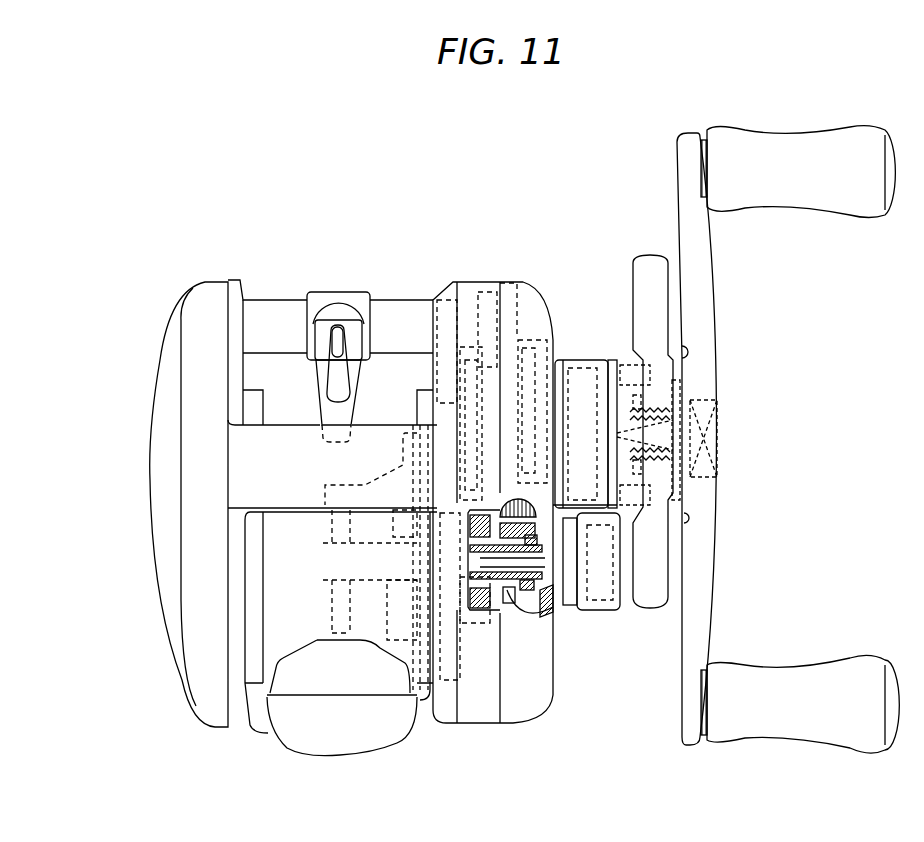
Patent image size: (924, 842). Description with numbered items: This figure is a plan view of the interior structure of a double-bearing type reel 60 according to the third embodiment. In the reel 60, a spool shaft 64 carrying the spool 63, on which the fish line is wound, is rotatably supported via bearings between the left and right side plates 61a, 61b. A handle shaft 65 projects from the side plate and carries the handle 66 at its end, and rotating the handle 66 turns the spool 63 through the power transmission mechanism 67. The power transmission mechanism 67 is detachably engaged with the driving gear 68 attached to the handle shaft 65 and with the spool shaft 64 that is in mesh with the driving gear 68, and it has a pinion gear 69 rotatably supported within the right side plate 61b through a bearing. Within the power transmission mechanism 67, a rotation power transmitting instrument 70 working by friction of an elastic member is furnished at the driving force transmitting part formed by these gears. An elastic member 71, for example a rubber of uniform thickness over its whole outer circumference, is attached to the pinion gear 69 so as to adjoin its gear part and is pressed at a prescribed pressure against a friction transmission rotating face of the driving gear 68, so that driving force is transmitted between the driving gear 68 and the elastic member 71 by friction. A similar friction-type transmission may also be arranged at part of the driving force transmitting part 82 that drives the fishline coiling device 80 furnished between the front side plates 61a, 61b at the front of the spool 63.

The double-bearing type reel 60 is at (483, 717).
The left side plate 61a is at (183, 311).
The right side plate 61b is at (522, 292).
The spool 63 is at (311, 645).
The spool shaft 64 is at (383, 585).
The handle shaft 65 is at (680, 450).
The handle 66 is at (702, 290).
The power transmission mechanism 67 is at (526, 486).
The driving gear 68 is at (520, 333).
The pinion gear 69 is at (503, 592).
The rotation power transmitting instrument 70 is at (555, 508).
The elastic member 71 is at (553, 595).
The fishline coiling device 80 is at (332, 290).
The driving force transmitting part 82 is at (468, 328).